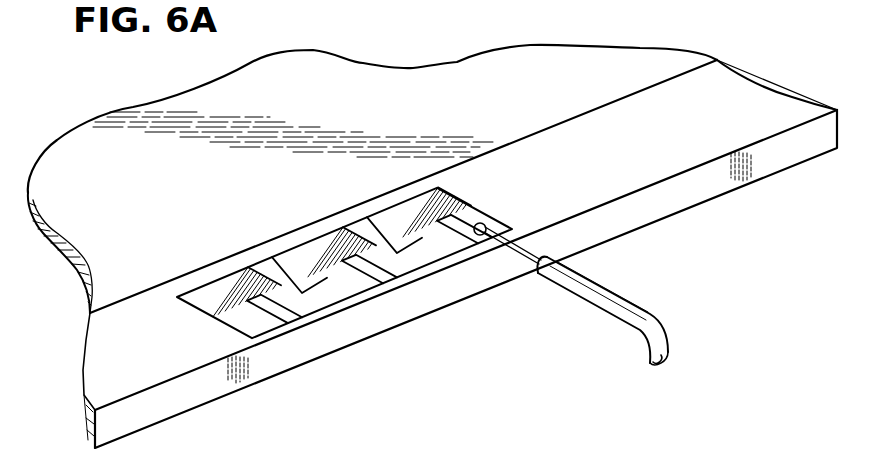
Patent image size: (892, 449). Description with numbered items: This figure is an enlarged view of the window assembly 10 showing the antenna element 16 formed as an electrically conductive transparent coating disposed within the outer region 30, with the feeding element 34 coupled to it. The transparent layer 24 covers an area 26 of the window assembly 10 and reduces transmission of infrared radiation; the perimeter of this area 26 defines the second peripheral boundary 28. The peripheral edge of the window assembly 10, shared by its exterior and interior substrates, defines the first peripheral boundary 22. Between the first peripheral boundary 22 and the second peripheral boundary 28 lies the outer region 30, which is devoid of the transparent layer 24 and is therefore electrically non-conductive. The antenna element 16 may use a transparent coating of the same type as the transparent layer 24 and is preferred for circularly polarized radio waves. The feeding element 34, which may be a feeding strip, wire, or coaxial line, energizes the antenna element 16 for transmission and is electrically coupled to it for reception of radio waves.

The window assembly 10 is at (527, 0).
The antenna element 16 is at (402, 217).
The first peripheral boundary 22 is at (153, 388).
The transparent layer 24 is at (102, 250).
The area 26 is at (125, 148).
The second peripheral boundary 28 is at (118, 303).
The outer region 30 is at (729, 108).
The feeding element 34 is at (615, 305).